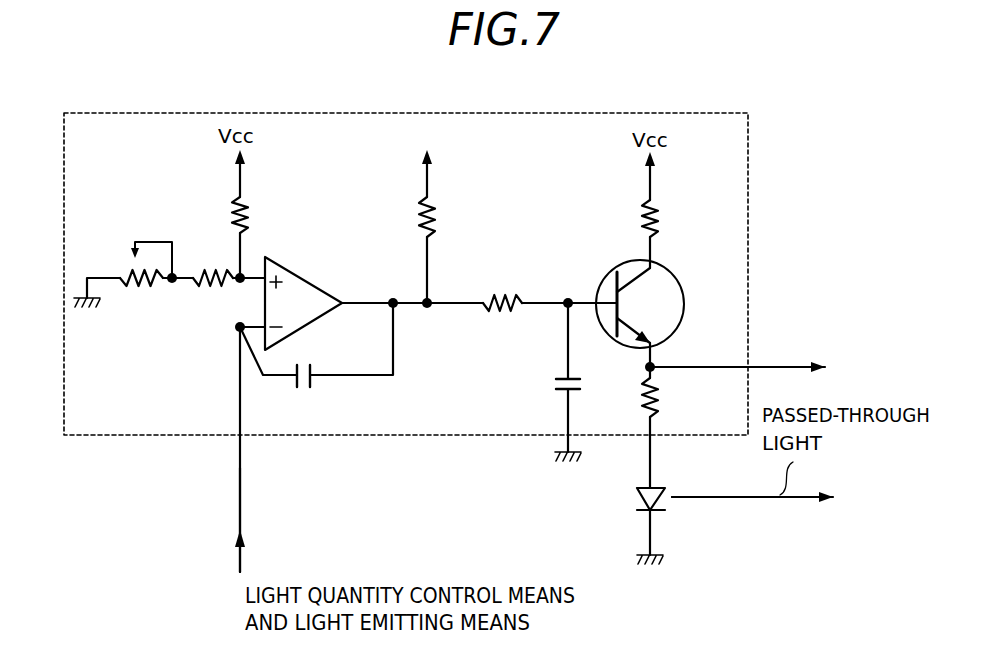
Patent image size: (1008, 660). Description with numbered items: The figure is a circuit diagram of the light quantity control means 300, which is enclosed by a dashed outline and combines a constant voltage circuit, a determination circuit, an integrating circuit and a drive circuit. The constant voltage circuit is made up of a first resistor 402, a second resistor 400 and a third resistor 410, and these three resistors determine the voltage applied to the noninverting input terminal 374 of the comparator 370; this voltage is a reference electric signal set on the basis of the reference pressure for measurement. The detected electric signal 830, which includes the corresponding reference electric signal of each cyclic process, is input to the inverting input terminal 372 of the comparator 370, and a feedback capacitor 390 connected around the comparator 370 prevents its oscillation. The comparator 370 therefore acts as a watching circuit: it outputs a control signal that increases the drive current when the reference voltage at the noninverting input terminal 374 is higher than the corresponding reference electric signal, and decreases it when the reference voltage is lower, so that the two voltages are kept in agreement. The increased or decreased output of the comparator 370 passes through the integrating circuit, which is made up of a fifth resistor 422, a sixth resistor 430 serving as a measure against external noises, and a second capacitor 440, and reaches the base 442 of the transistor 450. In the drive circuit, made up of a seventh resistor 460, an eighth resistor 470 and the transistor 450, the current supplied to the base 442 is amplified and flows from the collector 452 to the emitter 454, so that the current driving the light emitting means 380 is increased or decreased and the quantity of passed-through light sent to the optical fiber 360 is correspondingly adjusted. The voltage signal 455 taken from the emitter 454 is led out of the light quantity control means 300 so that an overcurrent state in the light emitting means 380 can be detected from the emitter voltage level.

The light quantity control means 300 is at (555, 113).
The resistor R1 402 is at (128, 288).
The resistor R2 400 is at (203, 268).
The resistor R3 410 is at (252, 205).
The comparator 370 is at (321, 306).
The noninverting input terminal 374 is at (237, 283).
The inverting input terminal 372 is at (237, 330).
The capacitor C1 390 is at (300, 390).
The detected electric signal 830 is at (240, 468).
The resistor R5 422 is at (443, 205).
The resistor R6 430 is at (500, 318).
The base 442 is at (583, 302).
The capacitor C2 440 is at (560, 393).
The transistor 450 is at (687, 287).
The collector 452 is at (637, 277).
The emitter 454 is at (641, 326).
The resistor R7 460 is at (636, 207).
The voltage signal 455 is at (780, 368).
The resistor R8 470 is at (633, 412).
The light emitting means 380 is at (640, 497).
The optical fiber 360 is at (793, 519).